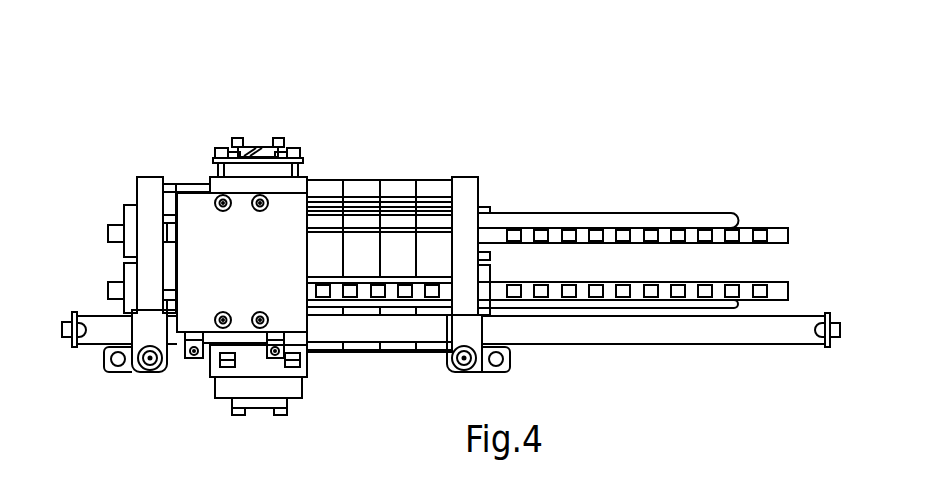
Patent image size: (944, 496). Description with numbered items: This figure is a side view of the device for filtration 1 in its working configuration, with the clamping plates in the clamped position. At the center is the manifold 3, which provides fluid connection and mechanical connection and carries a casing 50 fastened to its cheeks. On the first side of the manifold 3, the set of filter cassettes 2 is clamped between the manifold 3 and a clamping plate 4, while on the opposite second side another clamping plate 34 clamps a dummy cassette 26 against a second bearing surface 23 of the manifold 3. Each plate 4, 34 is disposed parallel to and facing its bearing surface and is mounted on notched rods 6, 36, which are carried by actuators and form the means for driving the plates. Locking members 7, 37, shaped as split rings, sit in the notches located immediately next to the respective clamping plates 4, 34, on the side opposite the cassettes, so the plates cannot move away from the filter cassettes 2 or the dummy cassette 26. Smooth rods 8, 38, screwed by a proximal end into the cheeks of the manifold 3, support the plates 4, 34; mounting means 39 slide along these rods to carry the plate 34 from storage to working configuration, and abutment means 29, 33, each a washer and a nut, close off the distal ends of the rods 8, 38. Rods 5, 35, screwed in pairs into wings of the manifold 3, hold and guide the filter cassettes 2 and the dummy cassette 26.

The device for filtration 1 is at (190, 72).
The filter cassettes 2 is at (330, 187).
The manifold 3 is at (259, 125).
The clamping plate 4 is at (466, 185).
The rods 5 is at (628, 220).
The notched rods 6 is at (705, 235).
The locking member 7 is at (483, 250).
The rod for supporting the clamping plate 8 is at (450, 333).
The second bearing surface 23 is at (189, 187).
The dummy cassette 26 is at (168, 184).
The abutment means 29 is at (842, 330).
The abutment means 33 is at (60, 338).
The clamping plate 34 is at (137, 180).
The rods 35 is at (172, 300).
The notched rods 36 is at (108, 233).
The locking member 37 is at (124, 208).
The rod for supporting the clamping plate 38 is at (97, 338).
The mounting means 39 is at (128, 368).
The casing 50 is at (262, 273).